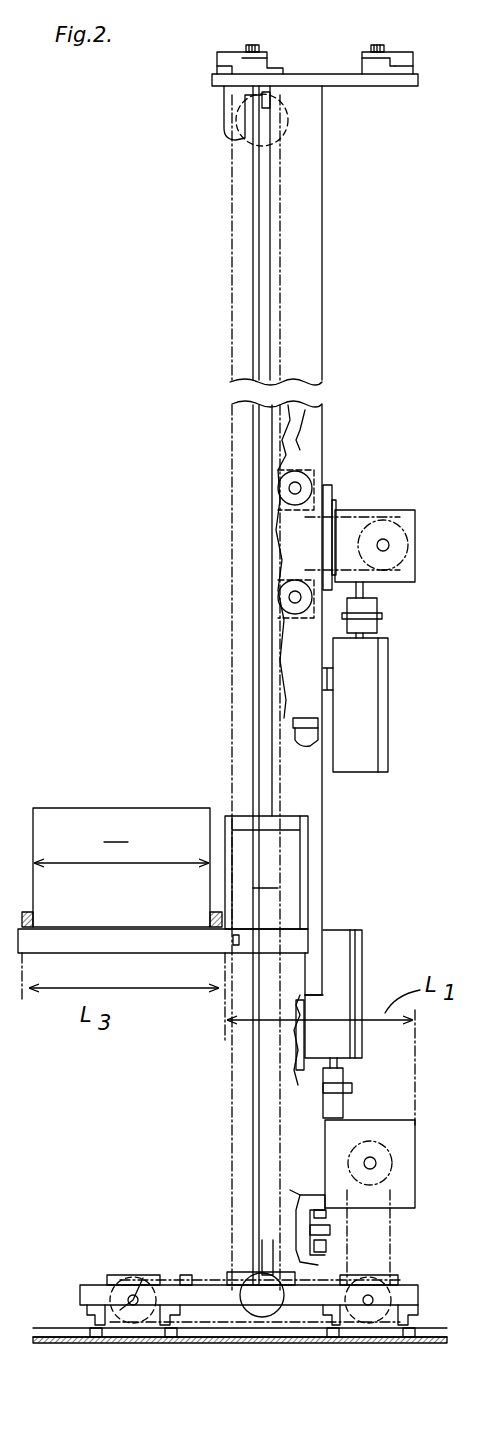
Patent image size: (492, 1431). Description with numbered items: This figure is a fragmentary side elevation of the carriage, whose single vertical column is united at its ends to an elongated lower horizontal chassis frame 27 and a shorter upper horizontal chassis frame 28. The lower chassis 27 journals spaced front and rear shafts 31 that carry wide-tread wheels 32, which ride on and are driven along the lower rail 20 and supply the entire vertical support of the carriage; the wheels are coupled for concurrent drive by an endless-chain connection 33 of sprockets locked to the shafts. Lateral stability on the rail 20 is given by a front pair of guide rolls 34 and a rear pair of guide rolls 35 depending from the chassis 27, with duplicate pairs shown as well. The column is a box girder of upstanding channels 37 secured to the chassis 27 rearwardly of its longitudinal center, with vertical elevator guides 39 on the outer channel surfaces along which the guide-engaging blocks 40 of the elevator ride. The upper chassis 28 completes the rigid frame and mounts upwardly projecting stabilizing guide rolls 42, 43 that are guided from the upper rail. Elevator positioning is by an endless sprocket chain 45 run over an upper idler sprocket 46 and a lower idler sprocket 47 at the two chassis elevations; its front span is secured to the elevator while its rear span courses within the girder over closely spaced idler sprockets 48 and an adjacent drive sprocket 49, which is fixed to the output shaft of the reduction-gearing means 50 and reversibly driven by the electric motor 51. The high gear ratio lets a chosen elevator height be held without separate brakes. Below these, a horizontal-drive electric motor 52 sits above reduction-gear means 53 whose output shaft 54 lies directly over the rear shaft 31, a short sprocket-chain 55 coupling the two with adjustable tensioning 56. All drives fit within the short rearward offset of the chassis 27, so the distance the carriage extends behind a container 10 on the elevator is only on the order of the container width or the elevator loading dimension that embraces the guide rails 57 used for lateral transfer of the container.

The container 10 is at (121, 867).
The rail 20 is at (42, 1328).
The lower horizontal chassis frame 27 is at (222, 1255).
The upper horizontal chassis frame 28 is at (389, 92).
The shaft 31 is at (122, 1280).
The roller or wheel 32 is at (145, 1276).
The endless-chain connection 33 is at (207, 1275).
The front pair of guide rolls 34 is at (85, 1342).
The rear pair of guide rolls 35 is at (405, 1342).
The upstanding channel 37 is at (310, 800).
The vertical elevator guide 39 is at (262, 352).
The guide-engaging block 40 is at (163, 884).
The upper stabilizing guide roll 42 is at (253, 45).
The upper stabilizing guide roll 43 is at (378, 45).
The endless sprocket chain 45 is at (230, 195).
The upper idler sprocket 46 is at (232, 115).
The lower idler sprocket 47 is at (240, 1318).
The idler sprocket 48 is at (282, 575).
The drive sprocket 49 is at (405, 530).
The reduction-gearing means 50 is at (415, 560).
The electric motor 51 is at (378, 690).
The horizontal-drive electric motor 52 is at (345, 970).
The reduction-gear means 53 is at (370, 1120).
The output shaft 54 is at (376, 1160).
The short sprocket-chain 55 is at (393, 1200).
The adjustable tensioning 56 is at (330, 1245).
The guide rail 57 is at (30, 912).